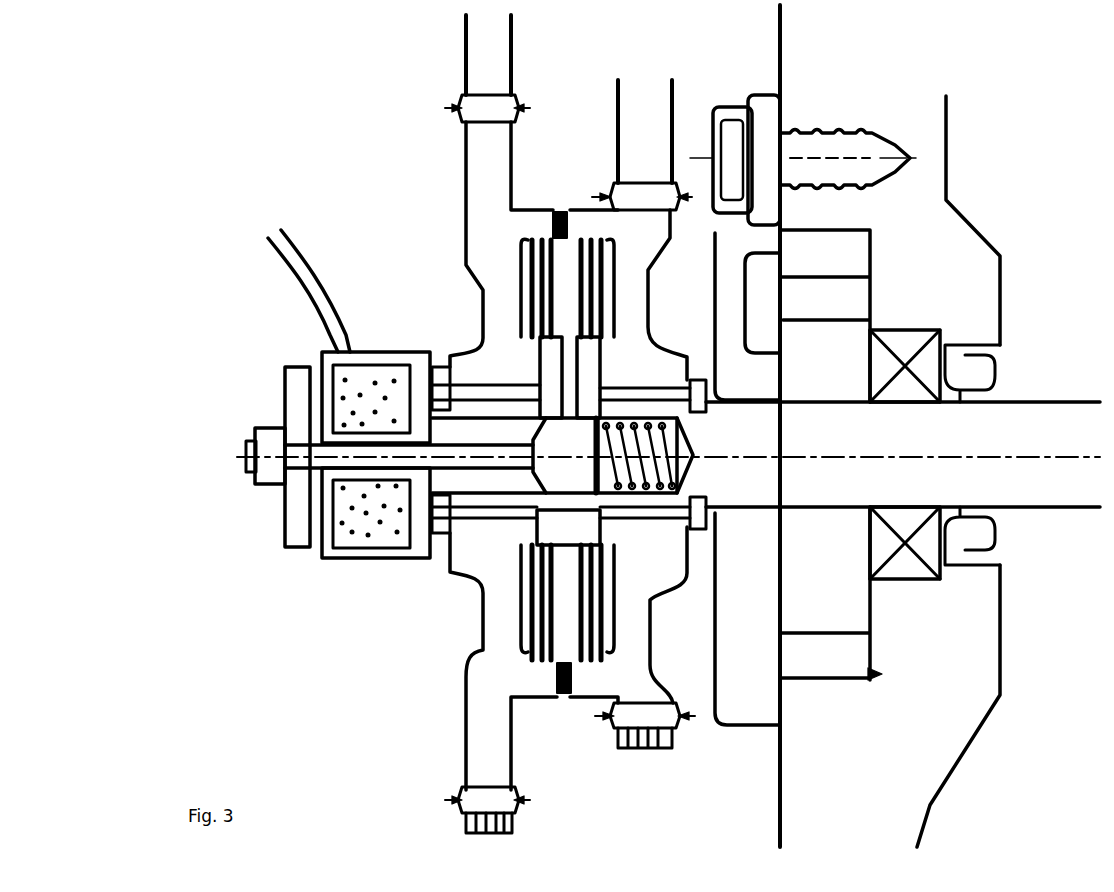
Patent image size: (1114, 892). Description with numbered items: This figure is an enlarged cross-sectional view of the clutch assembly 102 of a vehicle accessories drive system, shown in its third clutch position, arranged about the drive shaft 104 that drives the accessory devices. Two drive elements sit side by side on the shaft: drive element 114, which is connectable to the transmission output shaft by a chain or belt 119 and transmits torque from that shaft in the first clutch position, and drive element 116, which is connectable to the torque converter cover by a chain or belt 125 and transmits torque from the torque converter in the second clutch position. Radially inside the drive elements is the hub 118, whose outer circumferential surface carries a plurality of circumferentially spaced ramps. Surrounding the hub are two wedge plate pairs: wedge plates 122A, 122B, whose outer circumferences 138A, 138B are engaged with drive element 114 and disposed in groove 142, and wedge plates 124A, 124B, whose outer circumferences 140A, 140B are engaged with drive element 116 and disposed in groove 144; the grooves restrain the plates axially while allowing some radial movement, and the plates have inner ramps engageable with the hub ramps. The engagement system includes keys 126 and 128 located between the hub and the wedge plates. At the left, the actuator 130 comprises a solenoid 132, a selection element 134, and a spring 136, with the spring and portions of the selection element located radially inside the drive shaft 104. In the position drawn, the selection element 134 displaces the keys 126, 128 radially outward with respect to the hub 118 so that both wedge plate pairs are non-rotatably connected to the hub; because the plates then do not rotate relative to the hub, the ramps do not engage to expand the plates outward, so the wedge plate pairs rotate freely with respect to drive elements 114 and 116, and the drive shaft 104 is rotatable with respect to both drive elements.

The clutch assembly 102 is at (928, 62).
The drive shaft 104 is at (1052, 509).
The drive element 114 is at (452, 161).
The drive element 116 is at (680, 216).
The hub 118 is at (543, 530).
The chain or belt 119 is at (466, 40).
The wedge plate 122A is at (538, 608).
The wedge plate 122B is at (552, 618).
The wedge plate 124A is at (597, 627).
The wedge plate 124B is at (588, 650).
The chain or belt 125 is at (640, 108).
The key 126 is at (550, 372).
The key 128 is at (584, 373).
The actuator 130 is at (228, 416).
The solenoid 132 is at (357, 560).
The selection element 134 is at (560, 470).
The spring 136 is at (690, 462).
The outer circumference 138A is at (538, 238).
The outer circumference 138B is at (541, 236).
The outer circumference 140A is at (593, 234).
The outer circumference 140B is at (576, 236).
The groove 142 is at (540, 232).
The groove 144 is at (590, 230).